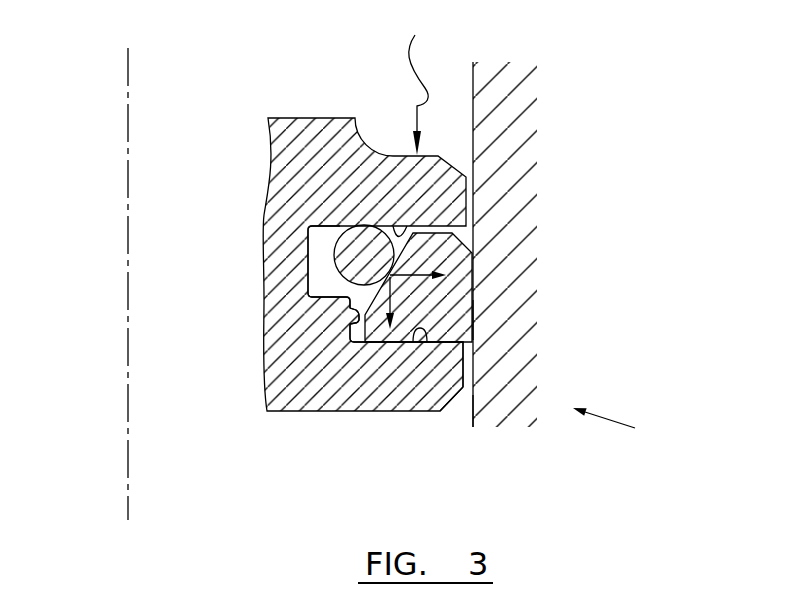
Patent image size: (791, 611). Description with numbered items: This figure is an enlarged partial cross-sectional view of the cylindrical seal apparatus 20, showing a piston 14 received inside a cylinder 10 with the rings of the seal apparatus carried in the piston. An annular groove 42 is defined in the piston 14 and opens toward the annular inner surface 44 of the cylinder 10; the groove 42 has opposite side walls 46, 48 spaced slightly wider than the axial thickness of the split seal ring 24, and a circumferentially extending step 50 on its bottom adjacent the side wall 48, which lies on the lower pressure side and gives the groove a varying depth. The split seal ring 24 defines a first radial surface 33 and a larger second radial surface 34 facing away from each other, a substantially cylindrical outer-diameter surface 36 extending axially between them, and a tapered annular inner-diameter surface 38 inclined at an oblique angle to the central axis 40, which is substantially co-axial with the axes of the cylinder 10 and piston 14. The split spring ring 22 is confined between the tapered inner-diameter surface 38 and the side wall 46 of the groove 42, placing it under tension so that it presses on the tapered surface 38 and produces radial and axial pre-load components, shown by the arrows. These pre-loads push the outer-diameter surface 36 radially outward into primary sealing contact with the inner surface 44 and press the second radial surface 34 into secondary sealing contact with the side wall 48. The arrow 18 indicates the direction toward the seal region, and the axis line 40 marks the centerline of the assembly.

The cylinder 10 is at (508, 365).
The piston 14 is at (295, 140).
The insertion direction arrow 18 is at (415, 77).
The cylindrical seal apparatus 20 is at (623, 431).
The split spring ring 22 is at (361, 236).
The split seal ring 24 is at (350, 337).
The first radial surface 33 is at (442, 233).
The second radial surface 34 is at (441, 343).
The outer-diameter surface 36 is at (474, 320).
The tapered annular inner-diameter surface 38 is at (306, 290).
The central axis 40 is at (128, 482).
The annular groove 42 is at (323, 254).
The annular inner surface 44 is at (462, 425).
The side wall 46 is at (402, 236).
The side wall 48 is at (415, 343).
The step 50 is at (357, 318).